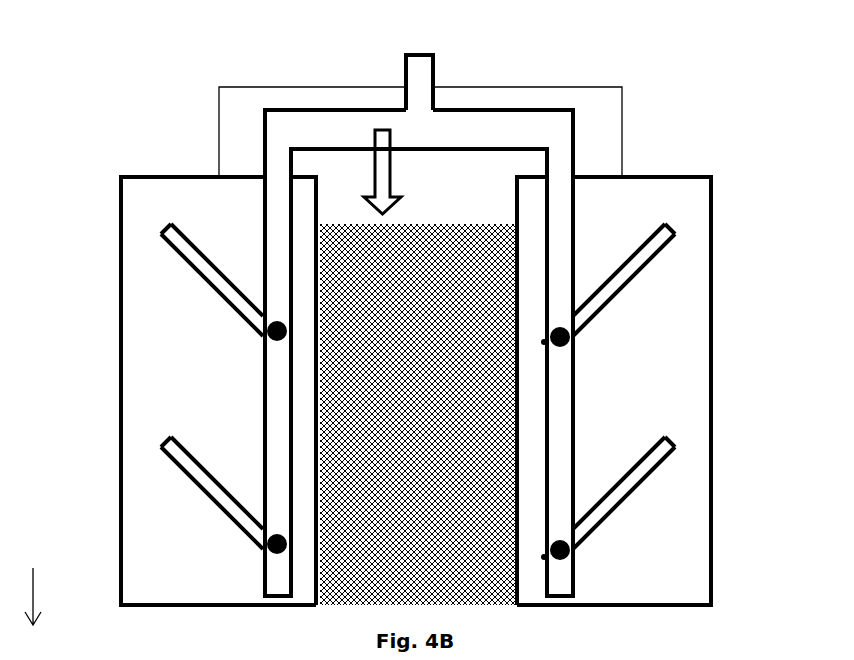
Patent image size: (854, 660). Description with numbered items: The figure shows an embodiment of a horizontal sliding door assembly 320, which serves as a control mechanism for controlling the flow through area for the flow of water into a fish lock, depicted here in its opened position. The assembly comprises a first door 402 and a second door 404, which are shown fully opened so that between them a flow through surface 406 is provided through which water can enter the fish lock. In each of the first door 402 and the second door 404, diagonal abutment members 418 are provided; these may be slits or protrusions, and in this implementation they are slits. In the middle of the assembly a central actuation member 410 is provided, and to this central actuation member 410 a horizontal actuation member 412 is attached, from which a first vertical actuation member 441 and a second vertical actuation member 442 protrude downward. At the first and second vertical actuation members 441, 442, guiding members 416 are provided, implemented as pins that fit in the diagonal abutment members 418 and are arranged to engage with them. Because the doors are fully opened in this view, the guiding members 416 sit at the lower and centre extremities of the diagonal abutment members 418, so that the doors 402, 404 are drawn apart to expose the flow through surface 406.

The horizontal sliding door assembly 320 is at (58, 30).
The first door 402 is at (253, 410).
The second door 404 is at (675, 418).
The flow through surface 406 is at (443, 288).
The central actuation member 410 is at (422, 68).
The horizontal actuation member 412 is at (285, 133).
The guiding members 416 is at (260, 333).
The diagonal abutment members 418 is at (200, 258).
The first vertical actuation member 441 is at (277, 212).
The second vertical actuation member 442 is at (560, 222).